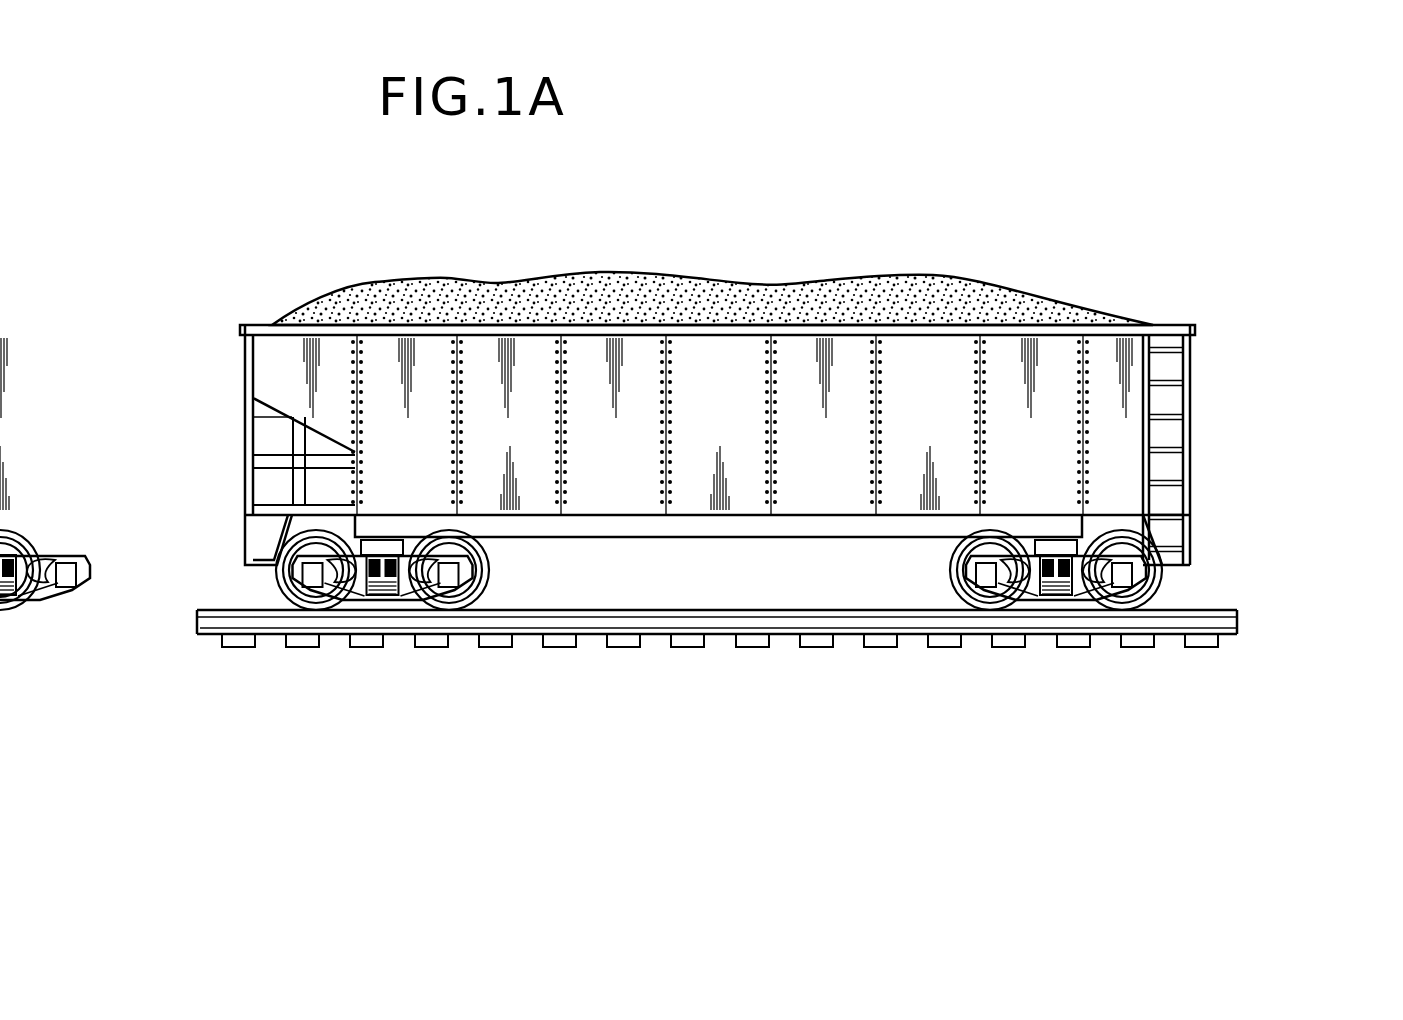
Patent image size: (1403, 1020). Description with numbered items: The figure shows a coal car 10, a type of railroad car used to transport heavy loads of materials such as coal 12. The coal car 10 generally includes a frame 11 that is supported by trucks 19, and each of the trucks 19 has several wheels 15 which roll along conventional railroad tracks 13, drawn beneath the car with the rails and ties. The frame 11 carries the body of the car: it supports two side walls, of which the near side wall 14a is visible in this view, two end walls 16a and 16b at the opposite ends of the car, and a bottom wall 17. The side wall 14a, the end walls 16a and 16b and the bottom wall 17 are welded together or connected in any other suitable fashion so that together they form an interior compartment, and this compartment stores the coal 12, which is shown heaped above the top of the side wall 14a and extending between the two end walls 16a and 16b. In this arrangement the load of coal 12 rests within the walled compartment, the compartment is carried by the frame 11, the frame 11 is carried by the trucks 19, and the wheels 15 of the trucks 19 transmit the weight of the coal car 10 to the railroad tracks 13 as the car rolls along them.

The coal car 10 is at (1270, 427).
The frame 11 is at (733, 546).
The coal 12 is at (748, 294).
The railroad tracks 13 is at (1230, 625).
The side wall 14a is at (605, 452).
The wheels 15 is at (308, 600).
The end wall 16a is at (238, 370).
The end wall 16b is at (1196, 370).
The bottom wall 17 is at (822, 520).
The trucks 19 is at (382, 600).